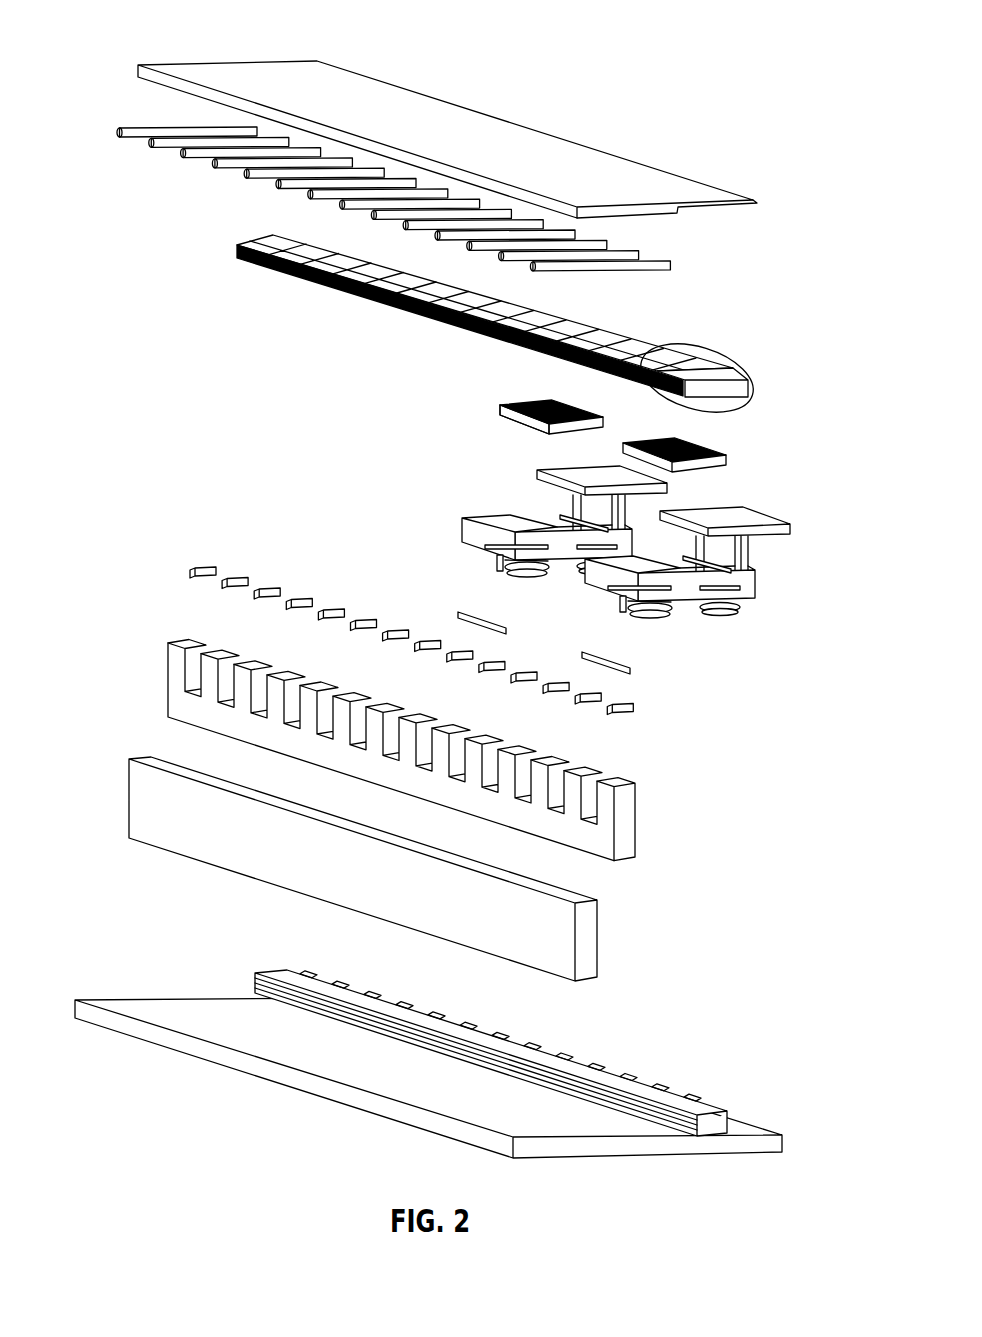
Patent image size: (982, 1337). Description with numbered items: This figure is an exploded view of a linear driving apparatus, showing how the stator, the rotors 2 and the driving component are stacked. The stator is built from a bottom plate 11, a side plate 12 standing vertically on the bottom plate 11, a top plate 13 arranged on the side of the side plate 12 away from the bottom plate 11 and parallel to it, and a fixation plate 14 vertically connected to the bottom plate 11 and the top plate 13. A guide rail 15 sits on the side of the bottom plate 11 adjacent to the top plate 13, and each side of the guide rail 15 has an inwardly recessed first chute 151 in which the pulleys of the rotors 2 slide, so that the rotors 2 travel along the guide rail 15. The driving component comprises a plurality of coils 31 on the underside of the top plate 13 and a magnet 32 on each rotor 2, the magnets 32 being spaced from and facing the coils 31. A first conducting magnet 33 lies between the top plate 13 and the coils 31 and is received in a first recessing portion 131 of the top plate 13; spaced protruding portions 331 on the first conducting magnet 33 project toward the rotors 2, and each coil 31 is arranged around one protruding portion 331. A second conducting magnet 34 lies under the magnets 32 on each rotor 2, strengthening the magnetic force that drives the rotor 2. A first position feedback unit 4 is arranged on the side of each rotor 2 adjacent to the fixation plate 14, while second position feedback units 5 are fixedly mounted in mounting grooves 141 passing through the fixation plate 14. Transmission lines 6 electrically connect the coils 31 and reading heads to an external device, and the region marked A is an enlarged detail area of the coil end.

The bottom plate 11 is at (203, 1015).
The side plate 12 is at (160, 805).
The top plate 13 is at (240, 80).
The first recessing portion 131 is at (698, 212).
The fixation plate 14 is at (336, 732).
The mounting groove 141 is at (186, 664).
The guide rail 15 is at (421, 1039).
The first chute 151 is at (668, 1118).
The rotor 2 is at (463, 525).
The coil 31 is at (429, 290).
The magnet 32 is at (498, 404).
The first conducting magnet 33 is at (270, 240).
The protruding portion 331 is at (262, 263).
The second conducting magnet 34 is at (507, 413).
The first position feedback unit 4 is at (612, 662).
The second position feedback unit 5 is at (612, 705).
The transmission line 6 is at (180, 130).
The detail region A is at (732, 412).